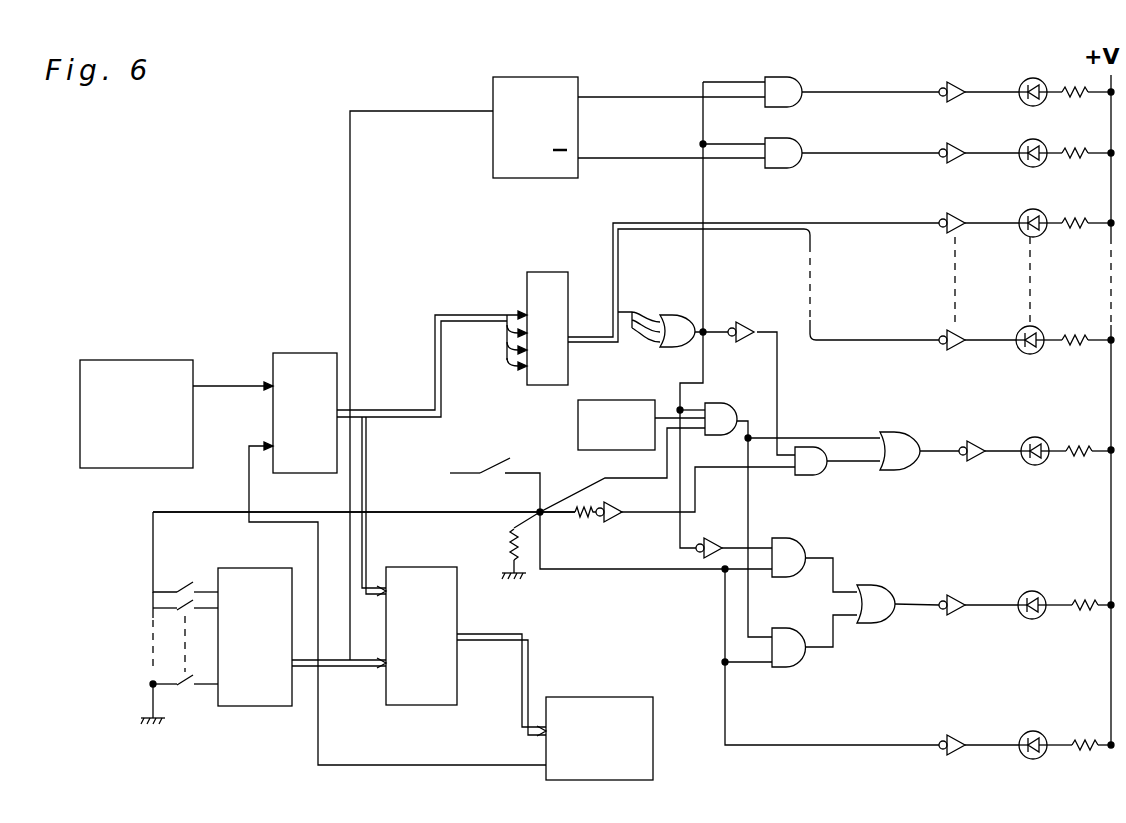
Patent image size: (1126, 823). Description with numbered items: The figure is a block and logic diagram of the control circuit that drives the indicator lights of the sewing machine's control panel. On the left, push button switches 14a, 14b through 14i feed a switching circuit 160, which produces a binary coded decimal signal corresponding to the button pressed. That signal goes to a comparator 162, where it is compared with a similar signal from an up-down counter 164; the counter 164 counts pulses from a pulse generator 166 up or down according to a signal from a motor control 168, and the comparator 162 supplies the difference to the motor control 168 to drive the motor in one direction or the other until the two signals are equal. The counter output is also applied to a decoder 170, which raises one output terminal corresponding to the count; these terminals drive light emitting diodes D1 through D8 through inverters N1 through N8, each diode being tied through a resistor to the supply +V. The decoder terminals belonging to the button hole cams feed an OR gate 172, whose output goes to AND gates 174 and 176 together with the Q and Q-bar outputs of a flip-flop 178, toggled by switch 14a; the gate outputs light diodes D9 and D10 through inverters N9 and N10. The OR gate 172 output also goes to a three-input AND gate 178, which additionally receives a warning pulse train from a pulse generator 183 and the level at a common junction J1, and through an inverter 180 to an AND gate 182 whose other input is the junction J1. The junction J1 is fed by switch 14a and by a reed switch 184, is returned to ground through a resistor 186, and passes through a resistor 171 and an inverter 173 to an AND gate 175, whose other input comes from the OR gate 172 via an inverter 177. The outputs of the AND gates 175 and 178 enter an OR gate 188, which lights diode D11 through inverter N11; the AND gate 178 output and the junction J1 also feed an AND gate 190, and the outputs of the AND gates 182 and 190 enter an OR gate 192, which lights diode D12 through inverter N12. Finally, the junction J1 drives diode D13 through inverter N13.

The pulse generator 166 is at (142, 360).
The up-down counter 164 is at (303, 353).
The decoder 170 is at (548, 272).
The flip-flop / AND gate 178 is at (548, 77).
The pulse generator 183 is at (608, 400).
The switching circuit 160 is at (258, 706).
The comparator 162 is at (423, 705).
The motor control 168 is at (610, 697).
The AND gate 174 is at (790, 78).
The AND gate 176 is at (825, 126).
The OR gate 172 is at (672, 315).
The inverter 177 is at (746, 322).
The AND gate 175 is at (810, 447).
The OR gate 188 is at (900, 432).
The inverter 180 is at (712, 540).
The AND gate 182 is at (790, 538).
The AND gate 190 is at (795, 656).
The OR gate 192 is at (880, 585).
The switch 184 is at (492, 460).
The common junction J1 is at (364, 490).
The resistor 186 is at (510, 551).
The resistor 171 is at (580, 517).
The inverter 173 is at (618, 521).
The first button switch 14a is at (190, 582).
The second button switch 14b is at (190, 600).
The button switch 14i is at (190, 677).
The inverter N9 is at (960, 82).
The light emitting diode D9 is at (1033, 78).
The inverter N10 is at (960, 143).
The light emitting diode D10 is at (1033, 139).
The inverter N1 is at (960, 213).
The light emitting diode D1 is at (1036, 209).
The inverter N8 is at (960, 330).
The light emitting diode D8 is at (1036, 326).
The inverter N11 is at (975, 441).
The light emitting diode D11 is at (1040, 437).
The inverter N12 is at (960, 595).
The light emitting diode D12 is at (1040, 592).
The inverter N13 is at (960, 735).
The light emitting diode D13 is at (1040, 732).